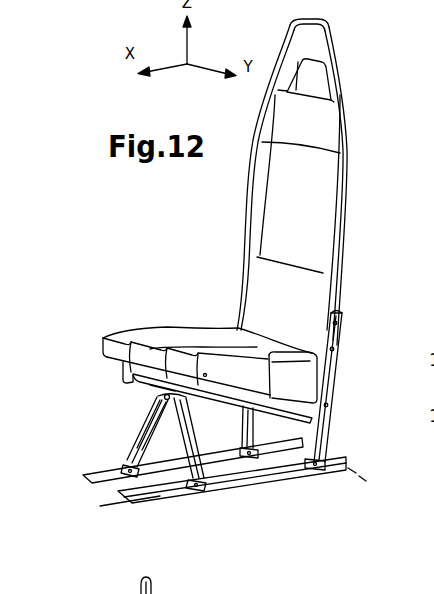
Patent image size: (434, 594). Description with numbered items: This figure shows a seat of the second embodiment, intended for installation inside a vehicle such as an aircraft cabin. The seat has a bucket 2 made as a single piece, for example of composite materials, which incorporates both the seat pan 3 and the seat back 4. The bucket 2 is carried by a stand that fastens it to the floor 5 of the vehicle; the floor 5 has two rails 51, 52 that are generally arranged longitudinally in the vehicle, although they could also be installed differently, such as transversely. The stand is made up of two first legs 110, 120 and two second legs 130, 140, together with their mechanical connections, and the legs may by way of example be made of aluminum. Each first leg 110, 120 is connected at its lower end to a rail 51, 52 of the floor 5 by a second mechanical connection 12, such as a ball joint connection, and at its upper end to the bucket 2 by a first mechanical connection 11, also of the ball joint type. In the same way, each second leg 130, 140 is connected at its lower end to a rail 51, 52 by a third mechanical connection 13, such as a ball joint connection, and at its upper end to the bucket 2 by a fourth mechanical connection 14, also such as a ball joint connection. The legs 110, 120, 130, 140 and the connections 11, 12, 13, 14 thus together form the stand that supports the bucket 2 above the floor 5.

The bucket 2 is at (340, 271).
The seat pan 3 is at (197, 337).
The seat back 4 is at (280, 241).
The floor 5 is at (150, 508).
The first mechanical connection 11 is at (133, 405).
The second mechanical connection 12 is at (126, 477).
The third mechanical connection 13 is at (312, 469).
The fourth mechanical connection 14 is at (338, 352).
The rail 51 is at (130, 499).
The rail 52 is at (108, 486).
The first leg 110 is at (250, 456).
The first leg 120 is at (132, 441).
The second leg 130 is at (328, 437).
The second leg 140 is at (257, 424).